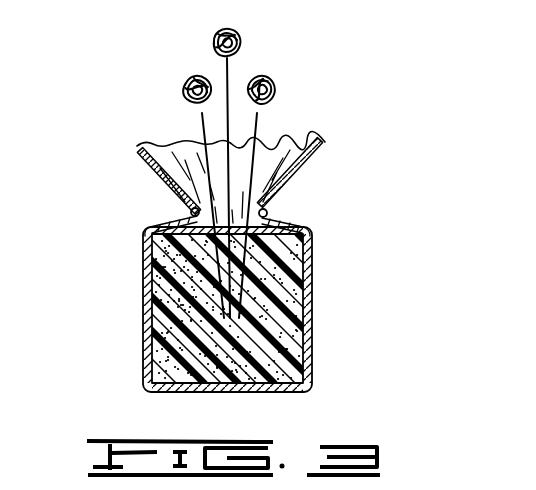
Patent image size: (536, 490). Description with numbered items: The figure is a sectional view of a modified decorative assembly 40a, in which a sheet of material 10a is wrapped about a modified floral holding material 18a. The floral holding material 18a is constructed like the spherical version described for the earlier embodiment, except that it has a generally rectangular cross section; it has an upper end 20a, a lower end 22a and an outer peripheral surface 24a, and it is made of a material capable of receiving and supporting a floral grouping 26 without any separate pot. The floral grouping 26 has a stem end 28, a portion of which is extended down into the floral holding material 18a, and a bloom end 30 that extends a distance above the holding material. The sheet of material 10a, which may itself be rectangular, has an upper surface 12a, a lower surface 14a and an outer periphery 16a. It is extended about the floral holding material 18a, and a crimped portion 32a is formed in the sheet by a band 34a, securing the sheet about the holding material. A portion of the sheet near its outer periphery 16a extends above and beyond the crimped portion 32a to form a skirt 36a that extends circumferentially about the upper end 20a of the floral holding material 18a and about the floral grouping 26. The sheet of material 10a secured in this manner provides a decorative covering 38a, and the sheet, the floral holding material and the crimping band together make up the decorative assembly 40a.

The sheet of material 10a is at (312, 279).
The upper surface 12a is at (297, 314).
The lower surface 14a is at (307, 359).
The outer periphery 16a is at (318, 144).
The floral holding material 18a is at (150, 369).
The upper end 20a is at (150, 219).
The lower end 22a is at (210, 391).
The outer peripheral surface 24a is at (150, 347).
The floral grouping 26 is at (277, 104).
The stem end 28 is at (150, 262).
The bloom end 30 is at (268, 60).
The crimped portion 32a is at (253, 190).
The band 34a is at (190, 212).
The skirt 36a is at (158, 171).
The decorative covering 38a is at (144, 305).
The decorative assembly 40a is at (279, 207).